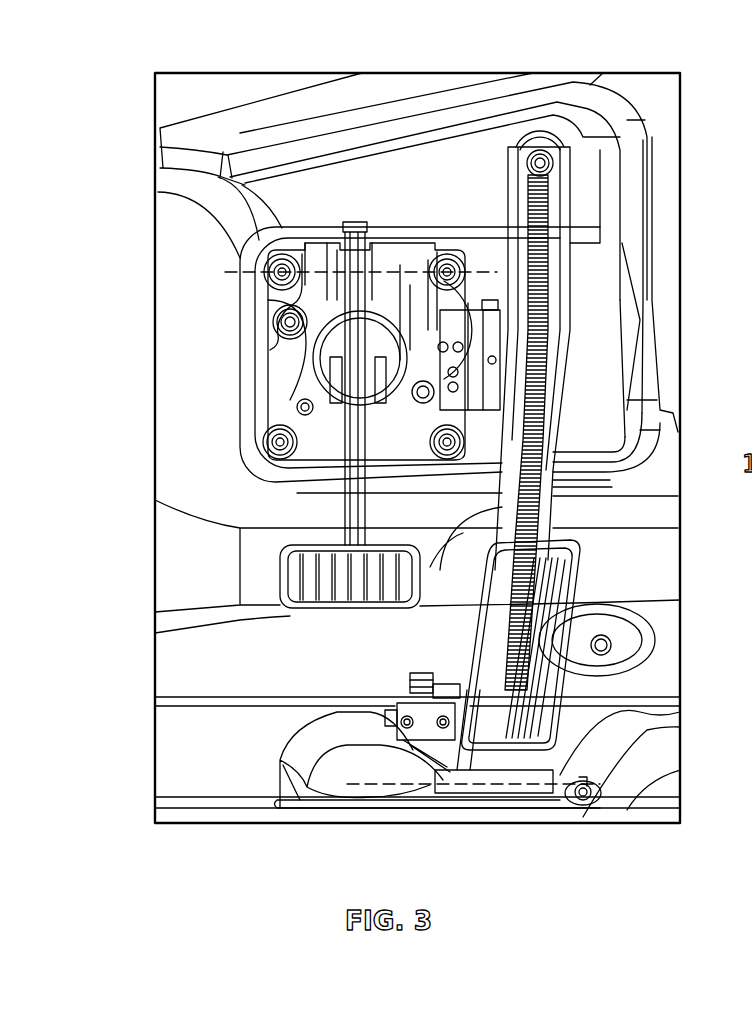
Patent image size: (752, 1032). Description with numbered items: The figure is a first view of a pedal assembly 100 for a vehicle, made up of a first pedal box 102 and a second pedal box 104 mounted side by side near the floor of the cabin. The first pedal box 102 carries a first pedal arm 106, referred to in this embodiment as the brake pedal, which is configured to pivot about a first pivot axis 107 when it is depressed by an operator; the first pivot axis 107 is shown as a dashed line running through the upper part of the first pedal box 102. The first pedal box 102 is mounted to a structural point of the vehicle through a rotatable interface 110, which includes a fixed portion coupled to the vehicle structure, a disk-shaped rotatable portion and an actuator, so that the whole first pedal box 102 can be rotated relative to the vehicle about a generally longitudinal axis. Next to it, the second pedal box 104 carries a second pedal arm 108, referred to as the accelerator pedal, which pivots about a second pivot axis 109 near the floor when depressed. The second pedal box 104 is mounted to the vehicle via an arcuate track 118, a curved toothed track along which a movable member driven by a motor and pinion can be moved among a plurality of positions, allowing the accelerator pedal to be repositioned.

The pedal assembly 100 is at (144, 99).
The first pedal box 102 is at (204, 353).
The second pedal box 104 is at (606, 386).
The first pedal arm 106 is at (300, 580).
The first pivot axis 107 is at (381, 270).
The second pedal arm 108 is at (560, 650).
The second pivot axis 109 is at (577, 812).
The rotatable interface 110 is at (257, 428).
The arcuate track 118 is at (553, 217).